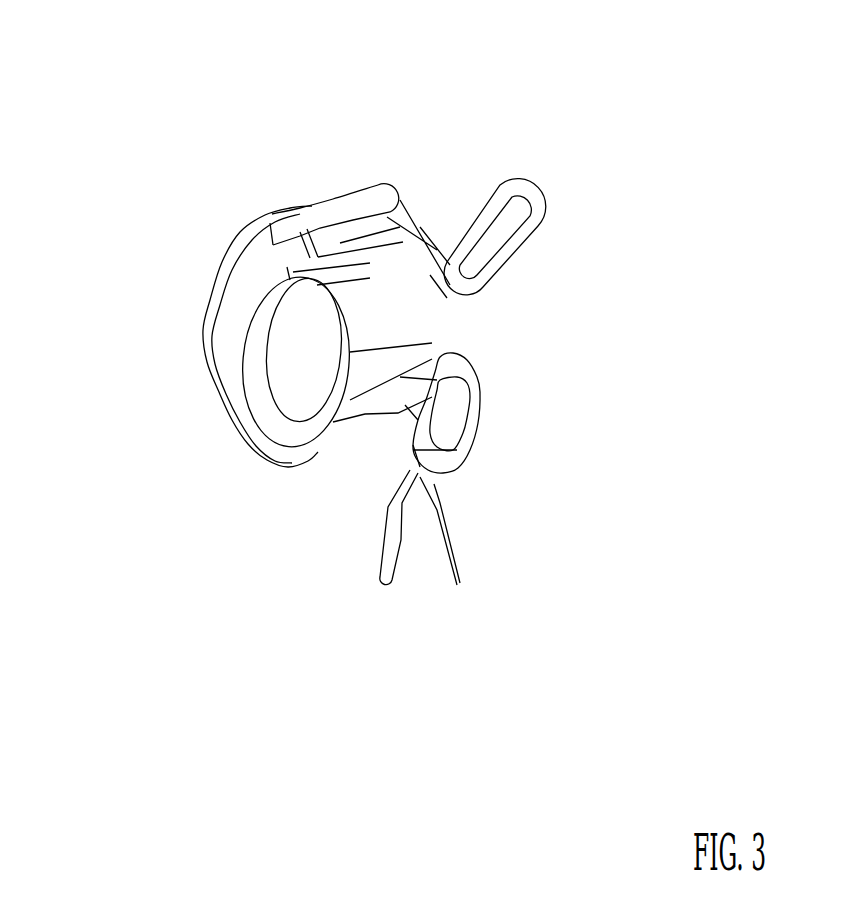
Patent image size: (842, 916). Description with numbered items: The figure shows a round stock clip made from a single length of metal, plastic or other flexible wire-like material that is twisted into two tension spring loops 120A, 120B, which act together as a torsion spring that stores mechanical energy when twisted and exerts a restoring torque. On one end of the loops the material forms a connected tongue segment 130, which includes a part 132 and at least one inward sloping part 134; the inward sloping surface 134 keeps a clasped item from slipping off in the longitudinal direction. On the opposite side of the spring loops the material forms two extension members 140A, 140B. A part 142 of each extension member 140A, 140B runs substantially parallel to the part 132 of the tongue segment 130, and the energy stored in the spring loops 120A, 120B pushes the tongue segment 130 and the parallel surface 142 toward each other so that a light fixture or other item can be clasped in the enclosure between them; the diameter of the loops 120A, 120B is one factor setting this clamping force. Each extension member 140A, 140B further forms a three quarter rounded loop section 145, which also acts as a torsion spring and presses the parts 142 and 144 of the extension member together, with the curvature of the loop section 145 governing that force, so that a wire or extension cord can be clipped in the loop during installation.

The tension spring loop 120A is at (205, 333).
The tension spring loop 120B is at (266, 452).
The tongue segment 130 is at (542, 188).
The part of the tongue segment 132 is at (330, 200).
The inward sloping part 134 is at (443, 245).
The extension member 140A is at (355, 190).
The extension member 140B is at (345, 440).
The parallel surface part of the extension member 142 is at (460, 584).
The part of the extension member 144 is at (480, 431).
The loop section 145 is at (480, 390).